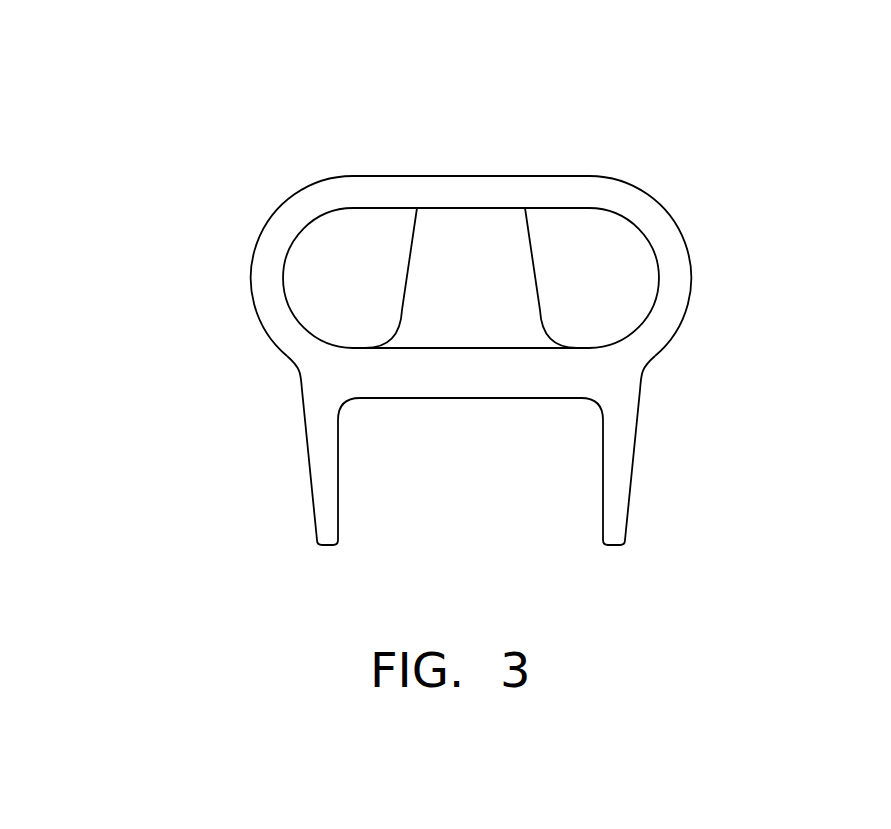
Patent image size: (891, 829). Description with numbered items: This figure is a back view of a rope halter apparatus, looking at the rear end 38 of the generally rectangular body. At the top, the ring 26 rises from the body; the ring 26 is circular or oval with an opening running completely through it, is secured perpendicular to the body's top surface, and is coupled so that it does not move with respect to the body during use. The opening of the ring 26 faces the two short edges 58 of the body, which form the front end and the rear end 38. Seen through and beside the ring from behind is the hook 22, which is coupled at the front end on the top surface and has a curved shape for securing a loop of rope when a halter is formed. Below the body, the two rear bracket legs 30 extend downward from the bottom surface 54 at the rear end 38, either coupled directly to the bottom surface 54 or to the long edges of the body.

The hook 22 is at (447, 220).
The ring 26 is at (552, 188).
The rear bracket legs 30 is at (323, 455).
The rear end 38 is at (325, 378).
The bottom surface 54 is at (473, 398).
The short edges 58 is at (598, 372).